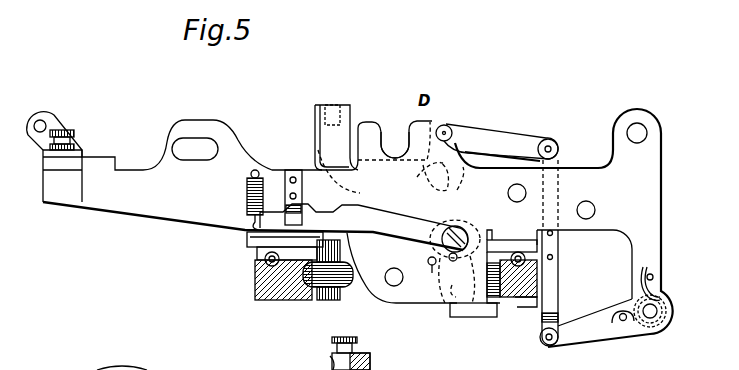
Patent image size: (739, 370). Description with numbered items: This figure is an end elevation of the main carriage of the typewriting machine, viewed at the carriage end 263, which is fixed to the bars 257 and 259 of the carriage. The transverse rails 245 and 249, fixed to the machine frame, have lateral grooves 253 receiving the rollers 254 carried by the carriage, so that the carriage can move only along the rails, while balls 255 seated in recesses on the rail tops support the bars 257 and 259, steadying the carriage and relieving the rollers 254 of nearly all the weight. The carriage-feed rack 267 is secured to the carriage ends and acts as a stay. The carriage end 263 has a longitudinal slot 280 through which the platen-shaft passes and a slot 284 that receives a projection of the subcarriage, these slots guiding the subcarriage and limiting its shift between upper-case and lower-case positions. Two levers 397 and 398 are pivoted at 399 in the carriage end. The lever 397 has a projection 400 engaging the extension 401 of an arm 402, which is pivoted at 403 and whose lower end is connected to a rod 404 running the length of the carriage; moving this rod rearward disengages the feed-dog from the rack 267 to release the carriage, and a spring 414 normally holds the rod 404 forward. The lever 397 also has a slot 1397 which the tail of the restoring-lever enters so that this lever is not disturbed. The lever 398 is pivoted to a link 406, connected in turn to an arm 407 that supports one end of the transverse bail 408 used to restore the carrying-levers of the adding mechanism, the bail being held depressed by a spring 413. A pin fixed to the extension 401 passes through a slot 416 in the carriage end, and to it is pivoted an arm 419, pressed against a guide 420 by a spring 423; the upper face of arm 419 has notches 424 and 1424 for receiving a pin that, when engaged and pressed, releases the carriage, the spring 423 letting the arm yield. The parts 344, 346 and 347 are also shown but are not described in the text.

The carriage end 263 is at (655, 171).
The slot 284 is at (191, 147).
The arm 419 is at (247, 181).
The spring 423 is at (247, 196).
The guide 420 is at (286, 175).
The notch 424 is at (302, 208).
The notch 1424 is at (360, 202).
The lever 397 is at (318, 117).
The slot 1397 is at (320, 108).
The longitudinal slot 280 is at (393, 125).
The pivot 399 is at (450, 124).
The lever 398 is at (344, 107).
The projection 400 is at (414, 194).
The extension 401 is at (470, 193).
The spring 414 is at (466, 224).
The slot 416 is at (497, 214).
The bar 257 is at (250, 247).
The transverse rail 245 is at (256, 292).
The lateral groove 253 is at (307, 276).
The ball 255 is at (265, 262).
The roller 254 is at (348, 288).
The rod 404 is at (443, 303).
The pivot 403 is at (443, 254).
The arm 402 is at (460, 314).
The bar 259 is at (510, 243).
The link 406 is at (562, 274).
The transverse rail 249 is at (526, 303).
The carriage-feed rack 267 is at (480, 310).
The transverse bail 408 is at (582, 336).
The arm 407 is at (621, 330).
The spring 413 is at (660, 292).
The body 344 is at (372, 356).
The knob 347 is at (336, 352).
The arm 346 is at (330, 357).